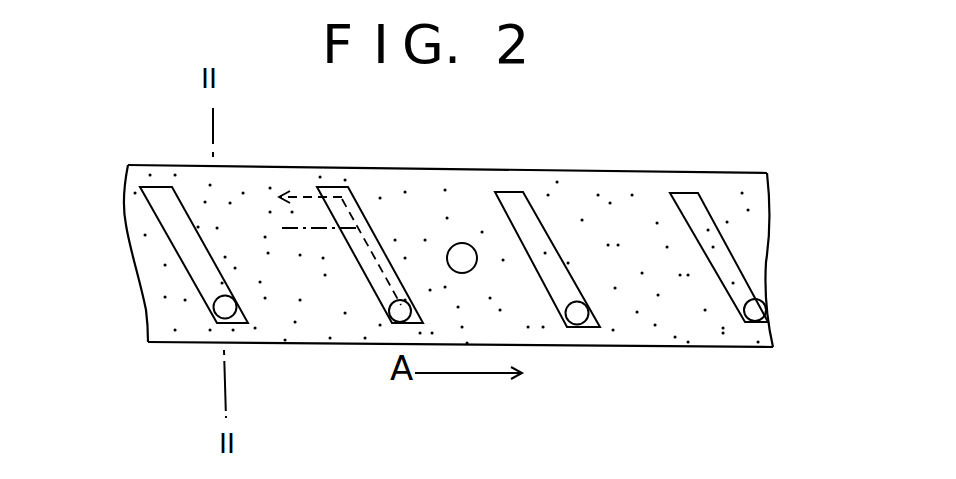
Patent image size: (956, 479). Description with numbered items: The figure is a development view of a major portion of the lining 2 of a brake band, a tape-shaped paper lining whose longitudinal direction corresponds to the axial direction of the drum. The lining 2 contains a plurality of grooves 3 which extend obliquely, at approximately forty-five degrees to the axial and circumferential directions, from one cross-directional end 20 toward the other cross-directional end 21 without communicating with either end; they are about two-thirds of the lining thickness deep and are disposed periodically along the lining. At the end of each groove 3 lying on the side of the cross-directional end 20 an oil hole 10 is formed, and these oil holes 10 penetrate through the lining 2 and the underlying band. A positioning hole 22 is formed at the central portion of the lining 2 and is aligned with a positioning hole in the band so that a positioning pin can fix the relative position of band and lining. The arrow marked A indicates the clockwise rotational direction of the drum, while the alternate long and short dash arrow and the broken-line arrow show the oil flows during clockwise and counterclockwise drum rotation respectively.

The lining 2 is at (620, 208).
The grooves 3 is at (183, 237).
The oil hole 10 is at (213, 314).
The cross-directional end 20 is at (700, 350).
The other cross-directional end 21 is at (717, 173).
The positioning hole 22 is at (463, 243).